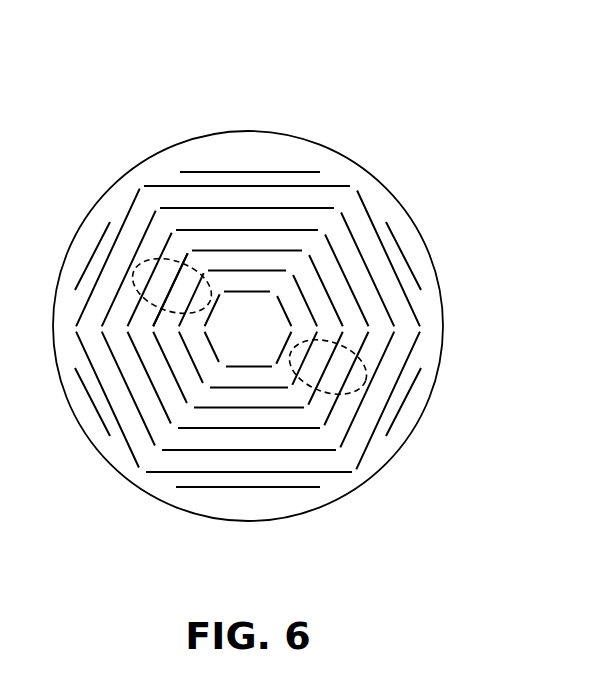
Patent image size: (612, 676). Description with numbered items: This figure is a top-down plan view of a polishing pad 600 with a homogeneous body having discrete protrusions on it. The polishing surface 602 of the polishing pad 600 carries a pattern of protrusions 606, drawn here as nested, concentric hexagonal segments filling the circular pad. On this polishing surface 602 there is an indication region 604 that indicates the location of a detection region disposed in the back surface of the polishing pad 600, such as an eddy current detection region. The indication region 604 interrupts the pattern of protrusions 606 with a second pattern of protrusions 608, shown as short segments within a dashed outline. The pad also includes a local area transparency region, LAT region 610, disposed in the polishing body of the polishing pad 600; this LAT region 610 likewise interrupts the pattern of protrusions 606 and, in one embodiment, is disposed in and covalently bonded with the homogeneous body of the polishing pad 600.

The polishing pad 600 is at (428, 60).
The polishing surface 602 is at (366, 195).
The indication region 604 is at (143, 261).
The pattern of protrusions 606 is at (246, 169).
The second pattern of protrusions 608 is at (176, 293).
The local area transparency (LAT) region 610 is at (364, 363).